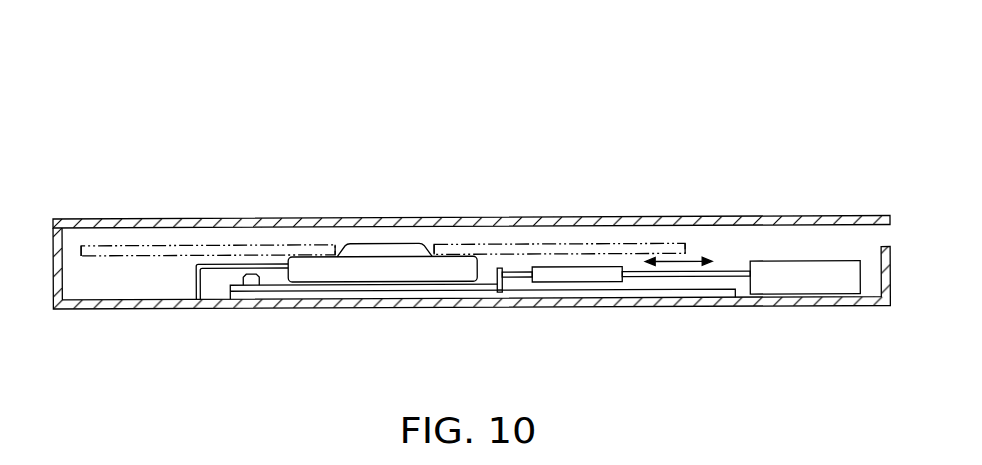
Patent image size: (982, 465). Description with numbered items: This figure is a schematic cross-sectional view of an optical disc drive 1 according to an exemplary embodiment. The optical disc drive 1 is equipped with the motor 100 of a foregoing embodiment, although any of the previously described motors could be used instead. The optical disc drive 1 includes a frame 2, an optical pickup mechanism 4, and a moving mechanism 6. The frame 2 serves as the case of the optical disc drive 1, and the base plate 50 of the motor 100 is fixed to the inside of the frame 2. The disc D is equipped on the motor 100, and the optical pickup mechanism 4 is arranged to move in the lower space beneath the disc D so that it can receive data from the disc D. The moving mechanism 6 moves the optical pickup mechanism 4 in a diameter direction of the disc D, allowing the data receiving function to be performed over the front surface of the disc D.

The optical disc drive 1 is at (548, 82).
The frame 2 is at (132, 310).
The optical pickup mechanism 4 is at (571, 281).
The moving mechanism 6 is at (721, 268).
The base plate 50 is at (406, 286).
The motor 100 is at (388, 240).
The disc D is at (549, 249).